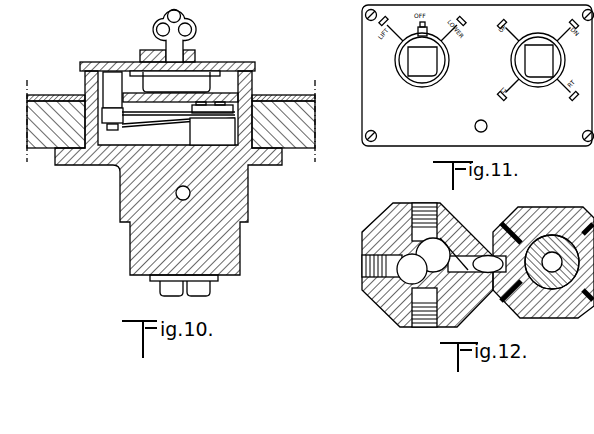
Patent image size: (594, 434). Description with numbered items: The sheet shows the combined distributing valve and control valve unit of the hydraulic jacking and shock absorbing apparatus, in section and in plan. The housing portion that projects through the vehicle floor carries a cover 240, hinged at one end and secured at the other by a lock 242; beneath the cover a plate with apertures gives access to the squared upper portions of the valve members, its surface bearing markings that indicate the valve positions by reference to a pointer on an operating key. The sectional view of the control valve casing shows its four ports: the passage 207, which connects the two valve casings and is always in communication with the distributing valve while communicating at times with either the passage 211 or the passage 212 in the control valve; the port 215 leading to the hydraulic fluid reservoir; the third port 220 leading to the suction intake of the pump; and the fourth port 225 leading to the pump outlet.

In FIG. 10, the passage 207 is at (176, 192).
In FIG. 12, the passage 207 is at (486, 257).
In FIG. 10, the cover 240 is at (217, 70).
In FIG. 10, the lock 242 is at (154, 61).
In FIG. 12, the third port 220 is at (425, 204).
In FIG. 12, the fourth port 225 is at (432, 316).
In FIG. 12, the port 215 is at (363, 267).
In FIG. 12, the passage 211 is at (436, 250).
In FIG. 12, the passage 212 is at (405, 272).